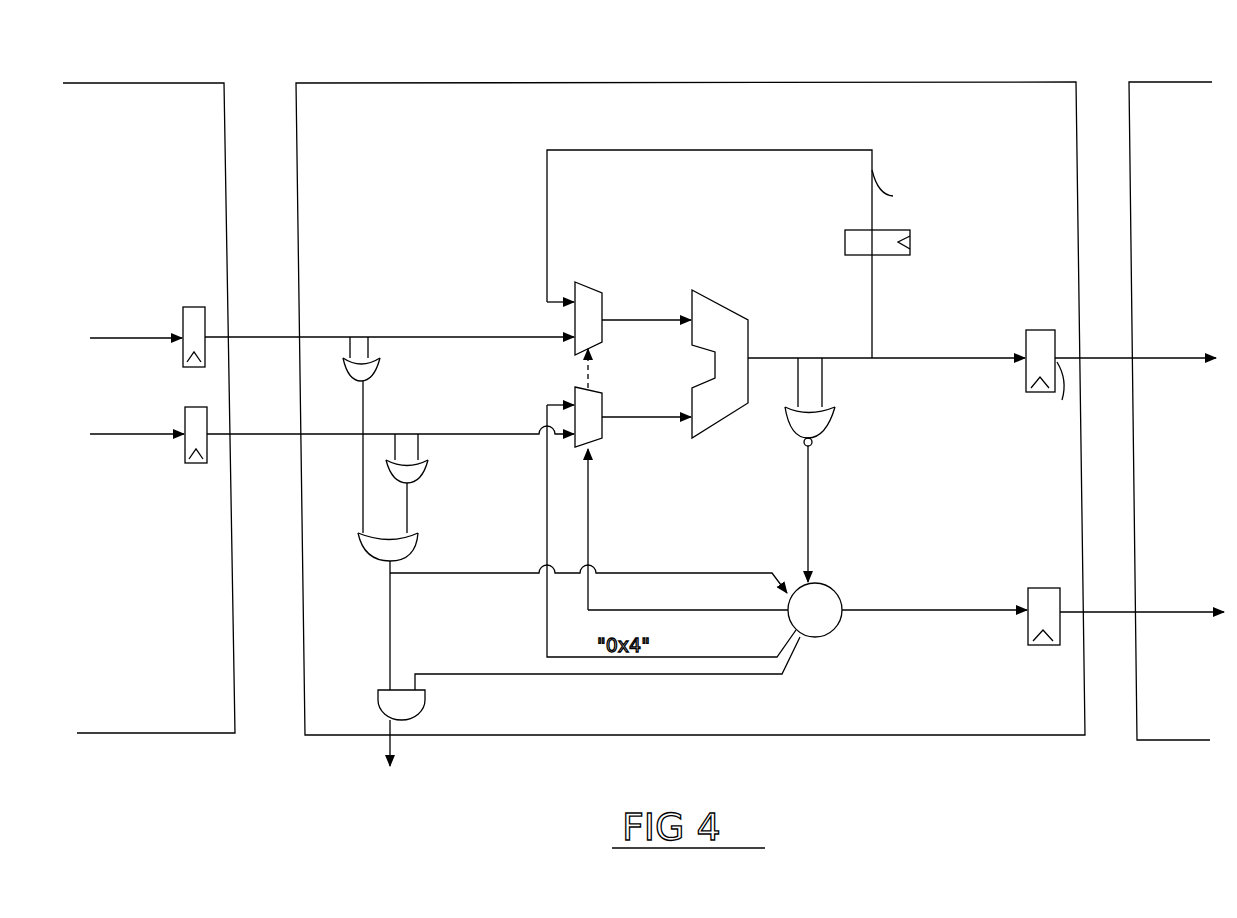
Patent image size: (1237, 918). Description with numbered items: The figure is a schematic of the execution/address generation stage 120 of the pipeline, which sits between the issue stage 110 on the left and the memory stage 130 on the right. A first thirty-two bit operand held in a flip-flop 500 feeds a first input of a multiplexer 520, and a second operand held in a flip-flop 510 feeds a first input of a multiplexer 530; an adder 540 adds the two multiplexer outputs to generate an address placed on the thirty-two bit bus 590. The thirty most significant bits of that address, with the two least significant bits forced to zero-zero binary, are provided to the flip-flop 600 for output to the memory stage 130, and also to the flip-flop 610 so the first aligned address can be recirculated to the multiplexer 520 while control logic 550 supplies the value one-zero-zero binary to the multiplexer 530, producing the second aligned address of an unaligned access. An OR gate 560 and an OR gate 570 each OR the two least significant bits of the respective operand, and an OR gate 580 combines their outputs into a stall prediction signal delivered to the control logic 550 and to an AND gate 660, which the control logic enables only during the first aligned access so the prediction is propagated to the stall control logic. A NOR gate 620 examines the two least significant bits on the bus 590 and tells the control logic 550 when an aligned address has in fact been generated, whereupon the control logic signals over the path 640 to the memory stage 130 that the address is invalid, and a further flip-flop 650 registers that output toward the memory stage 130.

The issue stage 110 is at (125, 82).
The execution/address generation stage 120 is at (942, 82).
The memory stage 130 is at (1162, 82).
The flip-flop 500 is at (188, 307).
The flip-flop 510 is at (192, 407).
The multiplexer 520 is at (589, 289).
The multiplexer 530 is at (603, 401).
The adder 540 is at (724, 423).
The control logic 550 is at (815, 638).
The OR gate 560 is at (357, 384).
The OR gate 570 is at (425, 478).
The OR gate 580 is at (366, 557).
The 32-bit bus 590 is at (767, 355).
The flip-flop 600 is at (1037, 330).
The flip-flop 610 is at (845, 237).
The NOR gate 620 is at (837, 426).
The path 640 is at (920, 615).
The next address register 650 is at (1042, 588).
The AND gate 660 is at (378, 690).